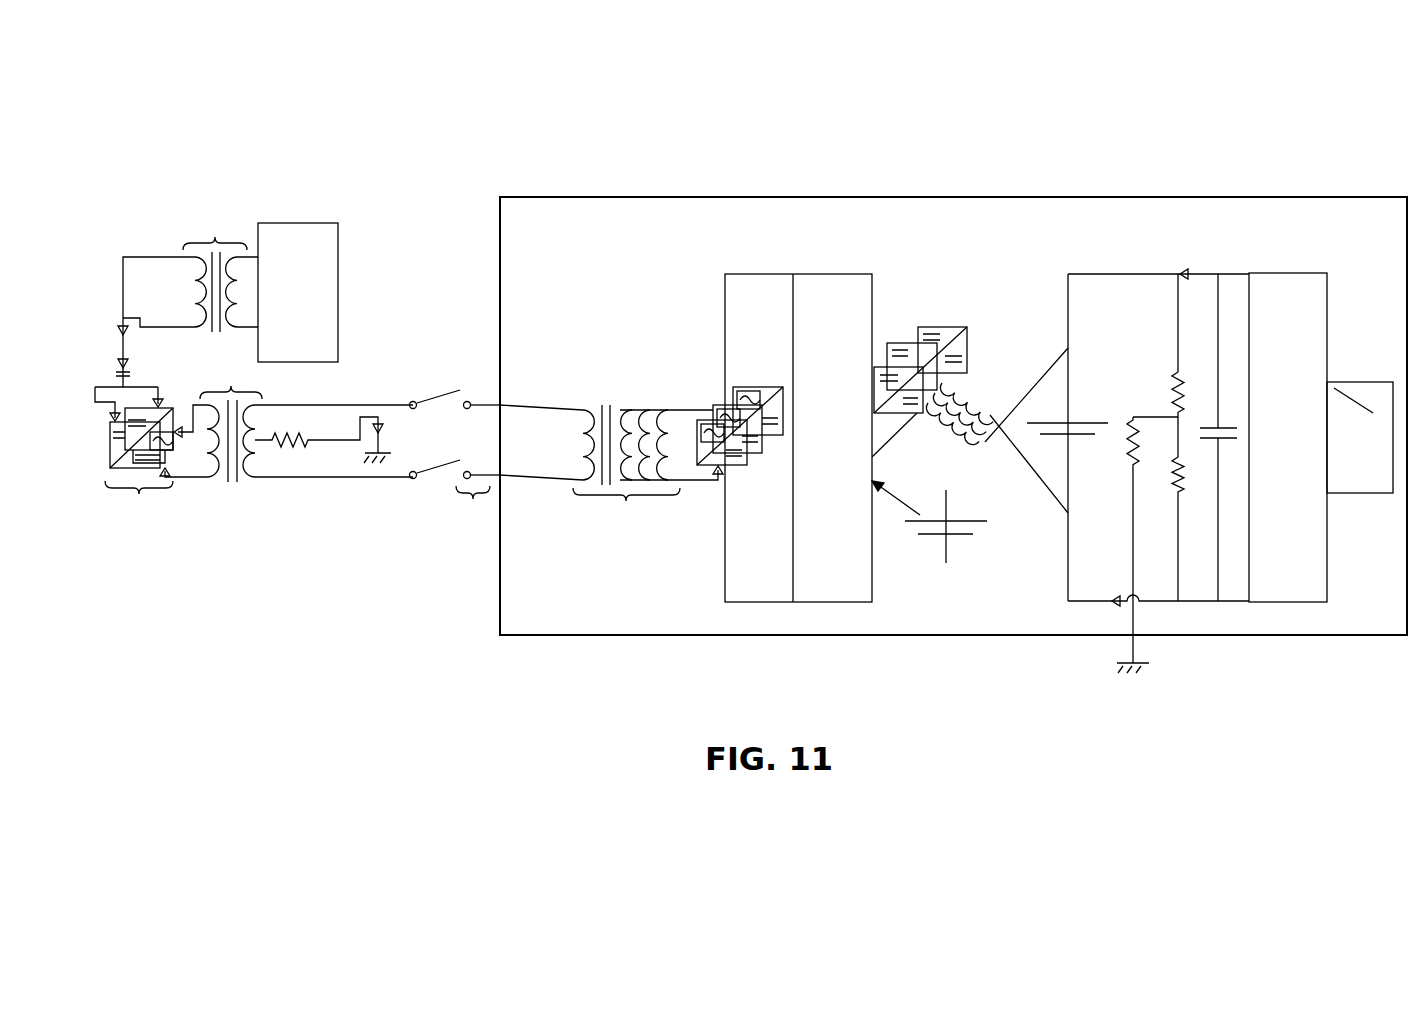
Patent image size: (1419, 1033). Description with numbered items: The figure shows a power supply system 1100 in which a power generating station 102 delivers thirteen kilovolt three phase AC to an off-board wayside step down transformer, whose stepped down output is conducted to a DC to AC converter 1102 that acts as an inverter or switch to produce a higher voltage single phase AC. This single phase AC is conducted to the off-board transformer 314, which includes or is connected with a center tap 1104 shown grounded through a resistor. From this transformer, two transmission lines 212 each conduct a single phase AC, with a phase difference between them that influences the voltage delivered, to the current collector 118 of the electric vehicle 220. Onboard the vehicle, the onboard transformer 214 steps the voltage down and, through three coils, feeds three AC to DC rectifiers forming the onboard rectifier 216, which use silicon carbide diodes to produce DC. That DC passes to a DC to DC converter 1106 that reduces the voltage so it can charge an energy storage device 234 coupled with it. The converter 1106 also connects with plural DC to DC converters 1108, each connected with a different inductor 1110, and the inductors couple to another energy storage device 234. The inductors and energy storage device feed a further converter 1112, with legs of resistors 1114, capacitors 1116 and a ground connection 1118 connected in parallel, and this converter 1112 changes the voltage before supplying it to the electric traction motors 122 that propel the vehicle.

The power supply system 1100 is at (185, 110).
The power generating station 102 is at (281, 306).
The DC to AC converter 1102 is at (134, 459).
The wayside transformer 314 is at (211, 418).
The transmission lines 212 is at (372, 405).
The center tap 1104 is at (325, 454).
The current collector 118 is at (455, 464).
The electric vehicle 220 is at (982, 197).
The onboard transformer 214 is at (611, 471).
The onboard rectifier 216 is at (716, 390).
The converter 1106 is at (832, 274).
The DC to DC converters 1108 is at (945, 312).
The inductor 1110 is at (993, 382).
The energy storage device 234 is at (934, 551).
The resistors 1114 is at (1188, 360).
The capacitors 1116 is at (1229, 456).
The ground connections 1118 is at (1156, 668).
The converter 1112 is at (1290, 273).
The electric traction motors 122 is at (1343, 456).